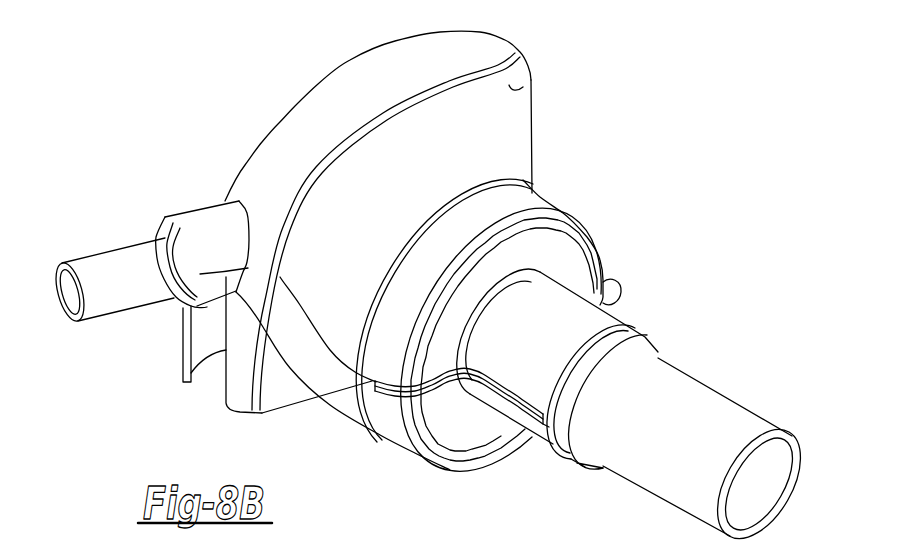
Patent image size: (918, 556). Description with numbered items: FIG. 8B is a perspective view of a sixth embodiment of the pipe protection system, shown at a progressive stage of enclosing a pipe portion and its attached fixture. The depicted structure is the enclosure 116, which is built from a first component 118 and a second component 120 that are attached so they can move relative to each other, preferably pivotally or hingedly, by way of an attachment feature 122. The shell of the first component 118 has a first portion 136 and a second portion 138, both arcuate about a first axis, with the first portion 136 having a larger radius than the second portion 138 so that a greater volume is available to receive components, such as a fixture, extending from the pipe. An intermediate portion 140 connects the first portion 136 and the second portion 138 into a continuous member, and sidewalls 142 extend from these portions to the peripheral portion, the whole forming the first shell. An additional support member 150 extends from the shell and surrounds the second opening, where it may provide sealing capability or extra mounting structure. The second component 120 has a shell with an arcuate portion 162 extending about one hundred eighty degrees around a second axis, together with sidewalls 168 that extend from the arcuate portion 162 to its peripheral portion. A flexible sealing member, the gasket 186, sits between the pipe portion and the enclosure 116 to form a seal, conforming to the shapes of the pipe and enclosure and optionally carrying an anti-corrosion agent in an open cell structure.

The enclosure 116 is at (622, 71).
The first portion 136 is at (343, 90).
The first component 118 is at (530, 82).
The intermediate portion 140 is at (533, 132).
The second portion 138 is at (550, 197).
The sidewalls 142 is at (392, 153).
The attachment feature 122 is at (621, 292).
The second component 120 is at (490, 443).
The gasket 186 is at (620, 340).
The sidewalls 168 is at (441, 432).
The arcuate portion 162 is at (395, 447).
The additional support member 150 is at (201, 210).